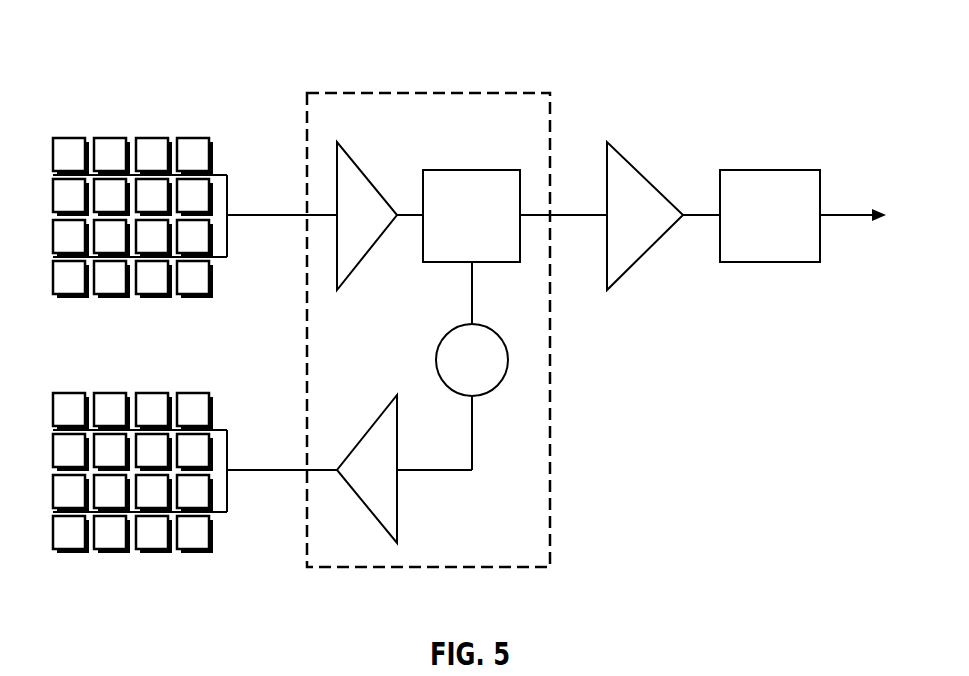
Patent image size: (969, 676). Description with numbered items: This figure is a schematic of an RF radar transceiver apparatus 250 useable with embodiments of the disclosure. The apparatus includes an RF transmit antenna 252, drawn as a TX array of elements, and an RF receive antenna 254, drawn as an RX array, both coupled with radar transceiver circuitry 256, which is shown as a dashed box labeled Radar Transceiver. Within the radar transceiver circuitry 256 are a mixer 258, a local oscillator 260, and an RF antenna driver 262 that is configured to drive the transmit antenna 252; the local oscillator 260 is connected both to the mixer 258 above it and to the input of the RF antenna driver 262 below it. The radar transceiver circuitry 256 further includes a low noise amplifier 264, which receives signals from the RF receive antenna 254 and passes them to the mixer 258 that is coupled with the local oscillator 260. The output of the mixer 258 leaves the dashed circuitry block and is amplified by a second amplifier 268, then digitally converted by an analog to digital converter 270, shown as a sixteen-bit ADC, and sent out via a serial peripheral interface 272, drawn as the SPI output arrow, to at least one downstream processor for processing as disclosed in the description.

The RF radar transceiver apparatus 250 is at (694, 47).
The RF transmit antenna 252 is at (150, 551).
The RF receive antenna 254 is at (150, 299).
The radar transceiver circuitry 256 is at (375, 569).
The mixer 258 is at (455, 170).
The local oscillator 260 is at (447, 334).
The RF antenna driver 262 is at (399, 500).
The low noise amplifier 264 is at (360, 262).
The second amplifier 268 is at (630, 268).
The analog to digital converter 270 is at (770, 263).
The serial peripheral interface 272 is at (839, 219).